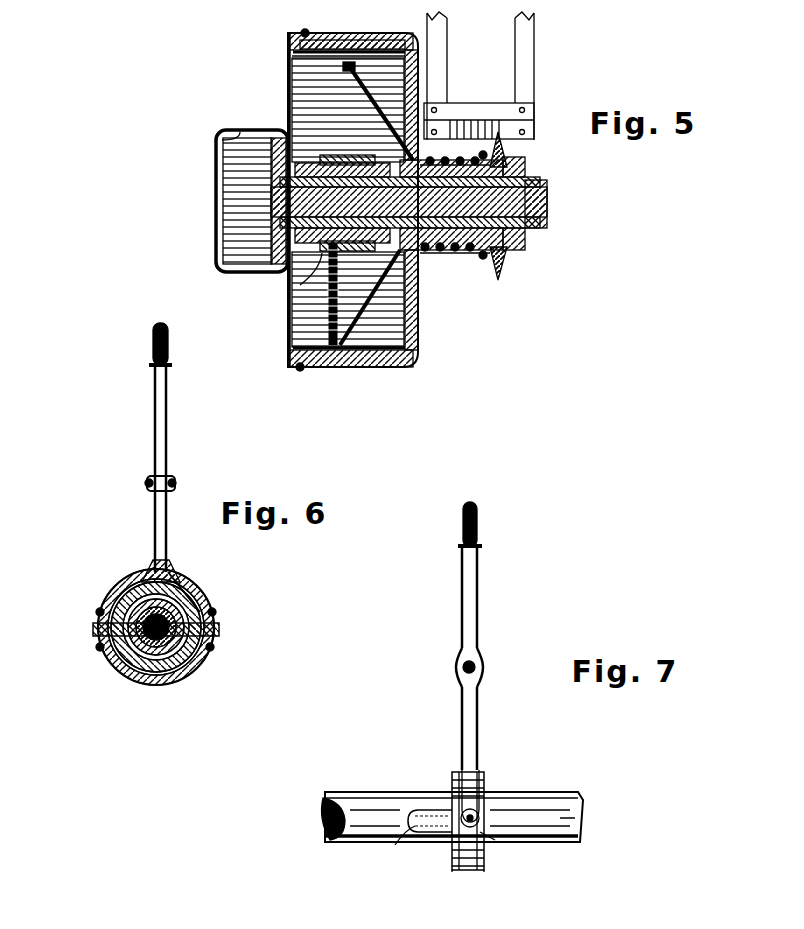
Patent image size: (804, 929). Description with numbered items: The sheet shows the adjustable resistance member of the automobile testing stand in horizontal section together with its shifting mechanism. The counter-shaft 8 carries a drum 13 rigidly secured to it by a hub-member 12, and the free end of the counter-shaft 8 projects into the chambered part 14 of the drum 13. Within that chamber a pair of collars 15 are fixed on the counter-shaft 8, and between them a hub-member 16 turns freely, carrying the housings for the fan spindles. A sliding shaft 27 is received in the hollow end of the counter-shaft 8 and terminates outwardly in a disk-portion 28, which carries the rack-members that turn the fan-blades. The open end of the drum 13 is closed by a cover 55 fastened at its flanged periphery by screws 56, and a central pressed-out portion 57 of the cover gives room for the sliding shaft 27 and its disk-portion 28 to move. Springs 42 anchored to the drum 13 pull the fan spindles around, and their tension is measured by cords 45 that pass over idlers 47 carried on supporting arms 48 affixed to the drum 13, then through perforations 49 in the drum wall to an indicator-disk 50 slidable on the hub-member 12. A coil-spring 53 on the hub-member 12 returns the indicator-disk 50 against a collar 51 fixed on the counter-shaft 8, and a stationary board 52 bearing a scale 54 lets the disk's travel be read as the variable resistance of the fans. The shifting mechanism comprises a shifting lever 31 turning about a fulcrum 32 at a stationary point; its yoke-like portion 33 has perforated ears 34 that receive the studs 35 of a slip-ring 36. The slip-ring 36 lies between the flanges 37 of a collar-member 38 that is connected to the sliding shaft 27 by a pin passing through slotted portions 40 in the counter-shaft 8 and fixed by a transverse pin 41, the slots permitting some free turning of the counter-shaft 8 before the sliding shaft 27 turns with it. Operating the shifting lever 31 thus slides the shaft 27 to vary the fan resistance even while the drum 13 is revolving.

In FIG. 5, the counter-shaft 8 is at (548, 182).
In FIG. 6, the counter-shaft 8 is at (160, 688).
In FIG. 7, the counter-shaft 8 is at (385, 800).
In FIG. 5, the hub-member 12 is at (525, 238).
In FIG. 5, the drum 13 is at (358, 40).
In FIG. 5, the chambered part 14 is at (290, 56).
In FIG. 5, the collars 15 is at (290, 123).
In FIG. 5, the hub-member 16 is at (300, 165).
In FIG. 5, the sliding shaft 27 is at (270, 205).
In FIG. 6, the sliding shaft 27 is at (130, 672).
In FIG. 7, the sliding shaft 27 is at (430, 810).
In FIG. 5, the disk-portion 28 is at (222, 177).
In FIG. 6, the shifting lever 31 is at (170, 411).
In FIG. 7, the shifting lever 31 is at (480, 588).
In FIG. 6, the fulcrum 32 is at (177, 484).
In FIG. 7, the fulcrum 32 is at (477, 667).
In FIG. 6, the yoke-like portion 33 is at (206, 602).
In FIG. 7, the yoke-like portion 33 is at (482, 772).
In FIG. 6, the perforated ears 34 is at (100, 650).
In FIG. 7, the perforated ears 34 is at (495, 842).
In FIG. 6, the studs 35 is at (93, 631).
In FIG. 7, the studs 35 is at (477, 812).
In FIG. 6, the slip-ring 36 is at (152, 688).
In FIG. 7, the slip-ring 36 is at (469, 872).
In FIG. 7, the flanges 37 is at (452, 874).
In FIG. 6, the collar-member 38 is at (186, 672).
In FIG. 6, the slotted portions 40 is at (100, 610).
In FIG. 7, the slotted portions 40 is at (410, 830).
In FIG. 6, the transverse pin 41 is at (180, 592).
In FIG. 5, the springs 42 is at (300, 300).
In FIG. 5, the cords 45 is at (368, 105).
In FIG. 5, the idlers or wheels 47 is at (288, 68).
In FIG. 5, the standards or supporting arms 48 is at (388, 40).
In FIG. 5, the perforations 49 is at (406, 158).
In FIG. 5, the indicator-disk 50 is at (508, 152).
In FIG. 5, the collar 51 is at (527, 170).
In FIG. 5, the board 52 is at (487, 110).
In FIG. 5, the coil-spring 53 is at (438, 160).
In FIG. 5, the scale or graduations 54 is at (487, 128).
In FIG. 5, the closure or cover 55 is at (290, 98).
In FIG. 5, the screws 56 is at (305, 30).
In FIG. 5, the pressed-out portion 57 is at (218, 144).